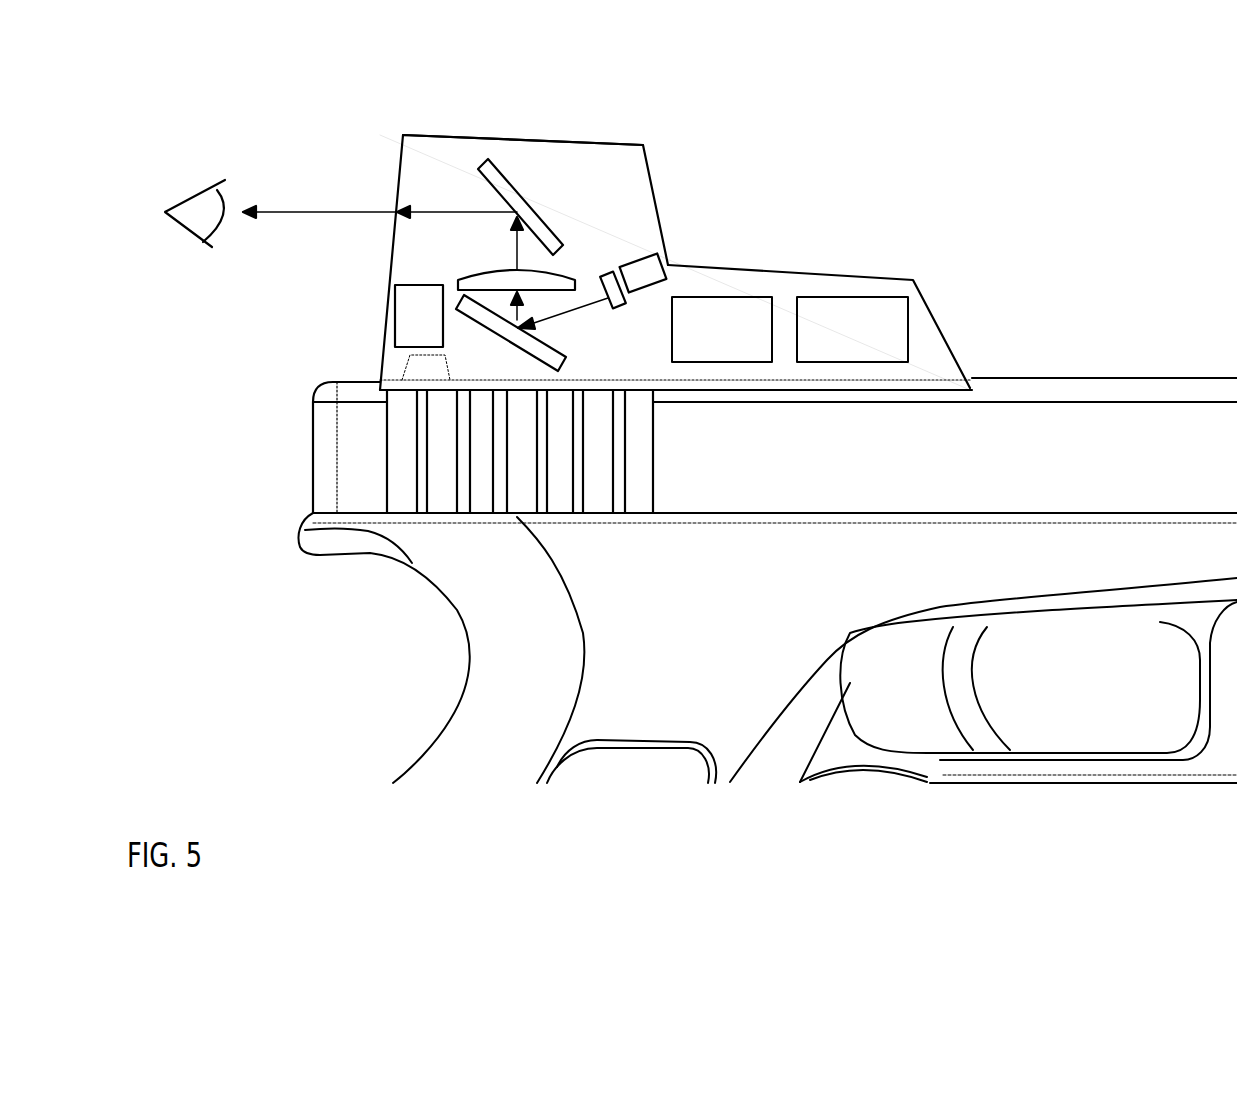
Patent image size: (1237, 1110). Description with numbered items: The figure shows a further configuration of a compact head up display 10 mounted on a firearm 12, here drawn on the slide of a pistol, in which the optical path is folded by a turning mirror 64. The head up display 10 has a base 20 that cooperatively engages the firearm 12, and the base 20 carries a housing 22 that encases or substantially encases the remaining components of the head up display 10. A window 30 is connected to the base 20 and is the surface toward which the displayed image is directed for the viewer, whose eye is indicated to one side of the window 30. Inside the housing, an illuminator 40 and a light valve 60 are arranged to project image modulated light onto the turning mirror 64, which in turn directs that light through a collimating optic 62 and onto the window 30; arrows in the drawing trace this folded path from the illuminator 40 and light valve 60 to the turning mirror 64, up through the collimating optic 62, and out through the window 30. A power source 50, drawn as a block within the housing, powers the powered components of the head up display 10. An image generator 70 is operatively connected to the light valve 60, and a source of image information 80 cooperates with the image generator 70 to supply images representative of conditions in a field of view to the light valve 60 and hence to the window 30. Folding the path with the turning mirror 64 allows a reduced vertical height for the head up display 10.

The head up display 10 is at (890, 163).
The firearm 12 is at (305, 454).
The base 20 is at (380, 368).
The housing 22 is at (948, 340).
The window 30 is at (400, 147).
The illuminator 40 is at (655, 290).
The power source 50 is at (395, 293).
The light valve 60 is at (618, 305).
The collimating optic 62 is at (553, 262).
The turning mirror 64 is at (458, 300).
The image generator 70 is at (722, 329).
The source of image information 80 is at (852, 329).